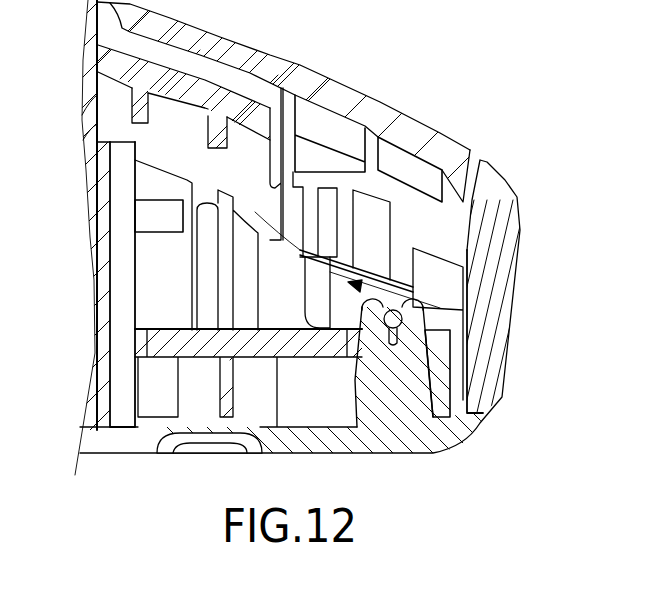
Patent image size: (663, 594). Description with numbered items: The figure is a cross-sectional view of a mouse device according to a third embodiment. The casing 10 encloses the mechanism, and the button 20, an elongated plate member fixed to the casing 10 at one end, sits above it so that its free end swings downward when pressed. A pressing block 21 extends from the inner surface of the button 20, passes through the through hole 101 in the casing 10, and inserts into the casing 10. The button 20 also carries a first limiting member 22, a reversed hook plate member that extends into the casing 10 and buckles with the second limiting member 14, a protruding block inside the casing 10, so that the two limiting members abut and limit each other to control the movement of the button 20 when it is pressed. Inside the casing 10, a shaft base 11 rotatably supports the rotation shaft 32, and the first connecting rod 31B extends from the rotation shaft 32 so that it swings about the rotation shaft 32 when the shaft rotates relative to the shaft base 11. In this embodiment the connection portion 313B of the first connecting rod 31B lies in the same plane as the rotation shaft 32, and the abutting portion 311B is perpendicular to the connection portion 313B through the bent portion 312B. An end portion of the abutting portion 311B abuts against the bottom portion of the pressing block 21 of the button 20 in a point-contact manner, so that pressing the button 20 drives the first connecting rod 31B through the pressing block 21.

The casing 10 is at (493, 345).
The shaft base 11 is at (455, 375).
The second limiting member 14 is at (157, 188).
The button 20 is at (357, 83).
The pressing block 21 is at (118, 150).
The first limiting member 22 is at (143, 221).
The first connecting rod 31B is at (360, 262).
The abutting portion 311B is at (425, 215).
The bent portion 312B is at (395, 238).
The connection portion 313B is at (437, 296).
The rotation shaft 32 is at (405, 300).
The through hole 101 is at (282, 172).